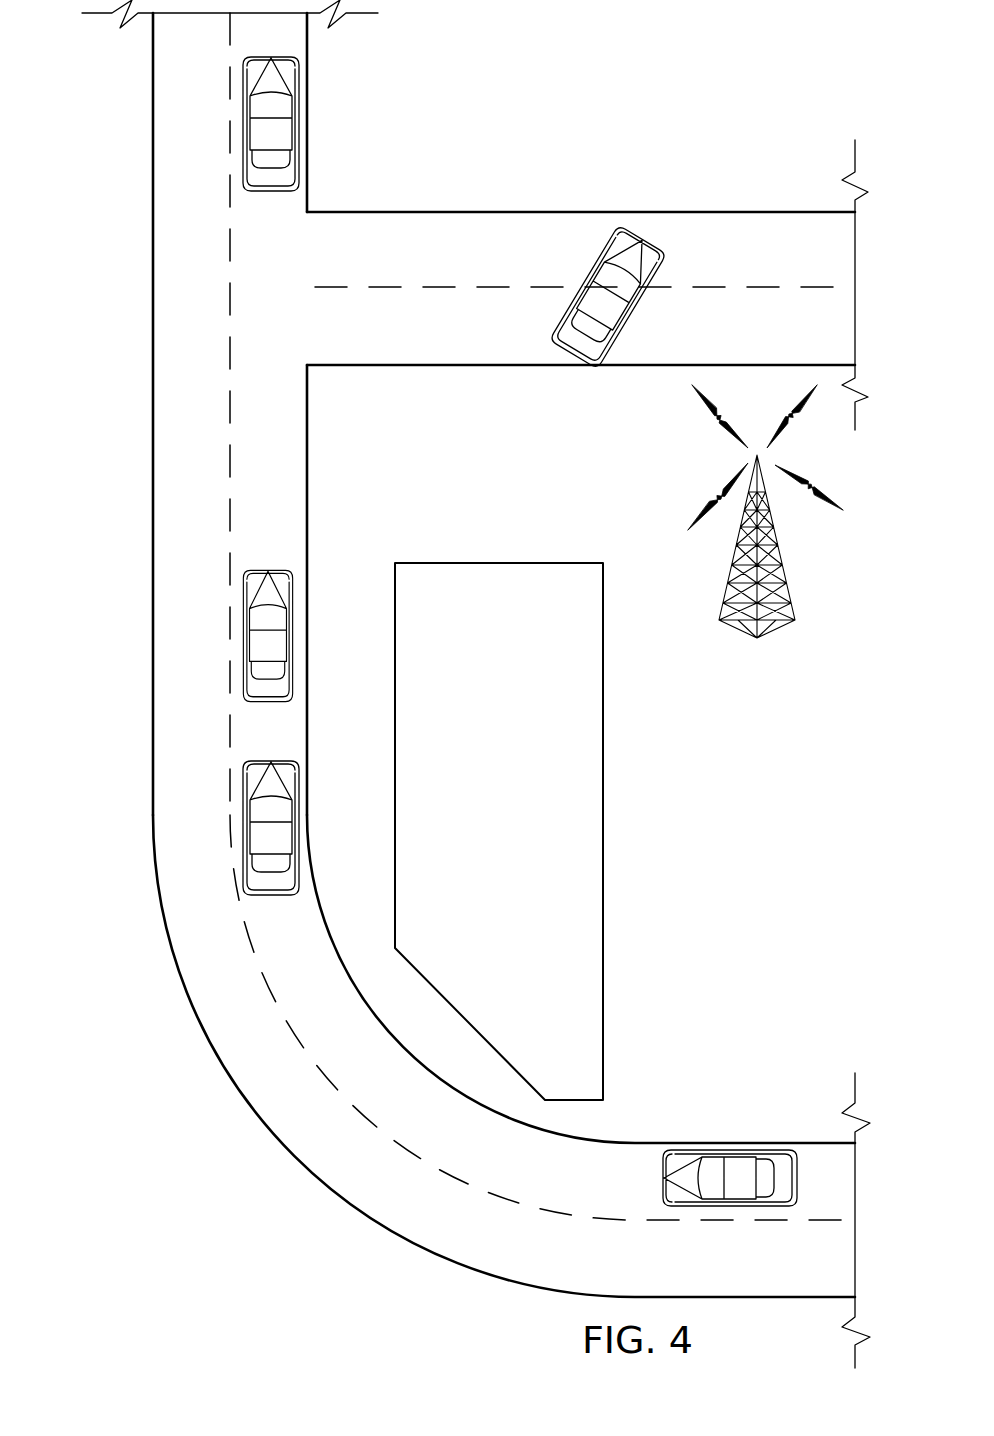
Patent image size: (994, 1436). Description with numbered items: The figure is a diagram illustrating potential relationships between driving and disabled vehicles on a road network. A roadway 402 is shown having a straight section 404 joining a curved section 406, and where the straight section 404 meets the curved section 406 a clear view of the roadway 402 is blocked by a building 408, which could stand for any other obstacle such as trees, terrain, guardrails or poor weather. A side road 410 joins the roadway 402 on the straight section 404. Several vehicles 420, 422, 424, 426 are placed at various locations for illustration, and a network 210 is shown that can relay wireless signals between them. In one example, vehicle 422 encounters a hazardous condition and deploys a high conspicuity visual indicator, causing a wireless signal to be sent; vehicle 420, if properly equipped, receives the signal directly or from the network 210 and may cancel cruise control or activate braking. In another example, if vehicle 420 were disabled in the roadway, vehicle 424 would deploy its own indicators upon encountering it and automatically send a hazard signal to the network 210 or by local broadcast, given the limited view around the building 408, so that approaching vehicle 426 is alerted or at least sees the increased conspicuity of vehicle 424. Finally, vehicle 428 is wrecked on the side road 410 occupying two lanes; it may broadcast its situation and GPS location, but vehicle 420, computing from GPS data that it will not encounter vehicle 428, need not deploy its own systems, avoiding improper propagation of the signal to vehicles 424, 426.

The network 210 is at (777, 631).
The roadway 402 is at (314, 429).
The straight section 404 is at (152, 417).
The curved section 406 is at (292, 1160).
The building 408 is at (521, 787).
The side road 410 is at (521, 211).
The vehicle 420 is at (293, 628).
The vehicle 422 is at (300, 127).
The vehicle 424 is at (298, 830).
The vehicle 426 is at (751, 1206).
The vehicle 428 is at (667, 236).